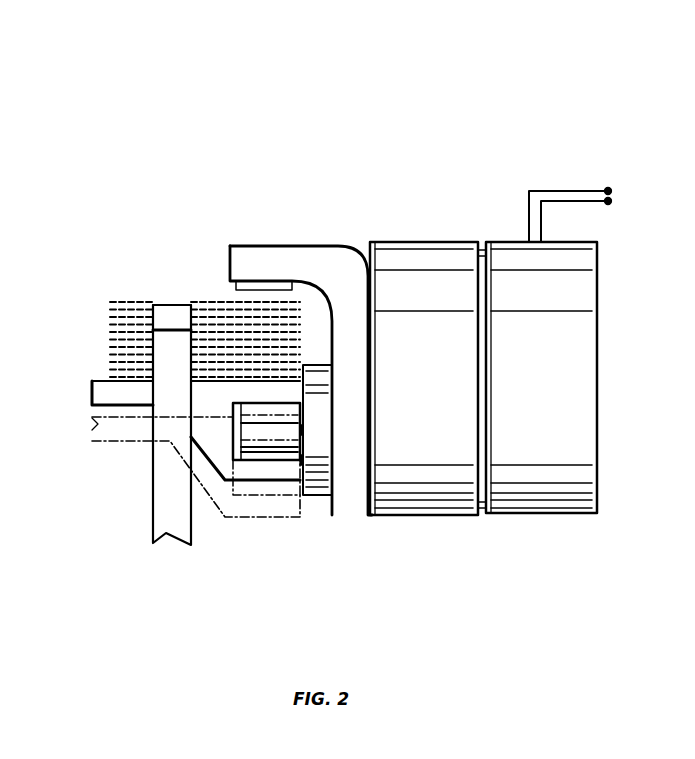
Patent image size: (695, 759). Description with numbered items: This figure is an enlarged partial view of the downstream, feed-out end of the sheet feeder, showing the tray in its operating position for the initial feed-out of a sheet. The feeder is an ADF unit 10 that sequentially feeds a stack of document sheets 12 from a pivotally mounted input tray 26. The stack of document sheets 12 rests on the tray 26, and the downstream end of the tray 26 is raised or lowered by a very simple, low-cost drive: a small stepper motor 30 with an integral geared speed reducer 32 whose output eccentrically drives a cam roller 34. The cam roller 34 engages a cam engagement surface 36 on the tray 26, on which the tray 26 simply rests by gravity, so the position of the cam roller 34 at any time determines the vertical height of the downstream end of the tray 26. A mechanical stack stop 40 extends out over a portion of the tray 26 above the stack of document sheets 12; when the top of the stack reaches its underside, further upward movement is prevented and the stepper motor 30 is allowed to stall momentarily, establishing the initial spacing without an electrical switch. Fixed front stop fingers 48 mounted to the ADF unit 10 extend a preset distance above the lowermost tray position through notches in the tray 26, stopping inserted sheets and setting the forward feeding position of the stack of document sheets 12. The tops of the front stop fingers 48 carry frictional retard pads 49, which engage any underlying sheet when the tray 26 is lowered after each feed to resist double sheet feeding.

The ADF unit 10 is at (408, 98).
The stack of document sheets 12 is at (108, 305).
The tray 26 is at (103, 403).
The stepper motor 30 is at (514, 262).
The geared speed reducer 32 is at (423, 258).
The cam roller 34 is at (256, 444).
The cam engagement surface 36 is at (246, 402).
The stack stop 40 is at (270, 290).
The front stop fingers 48 is at (170, 400).
The retard pads 49 is at (170, 308).